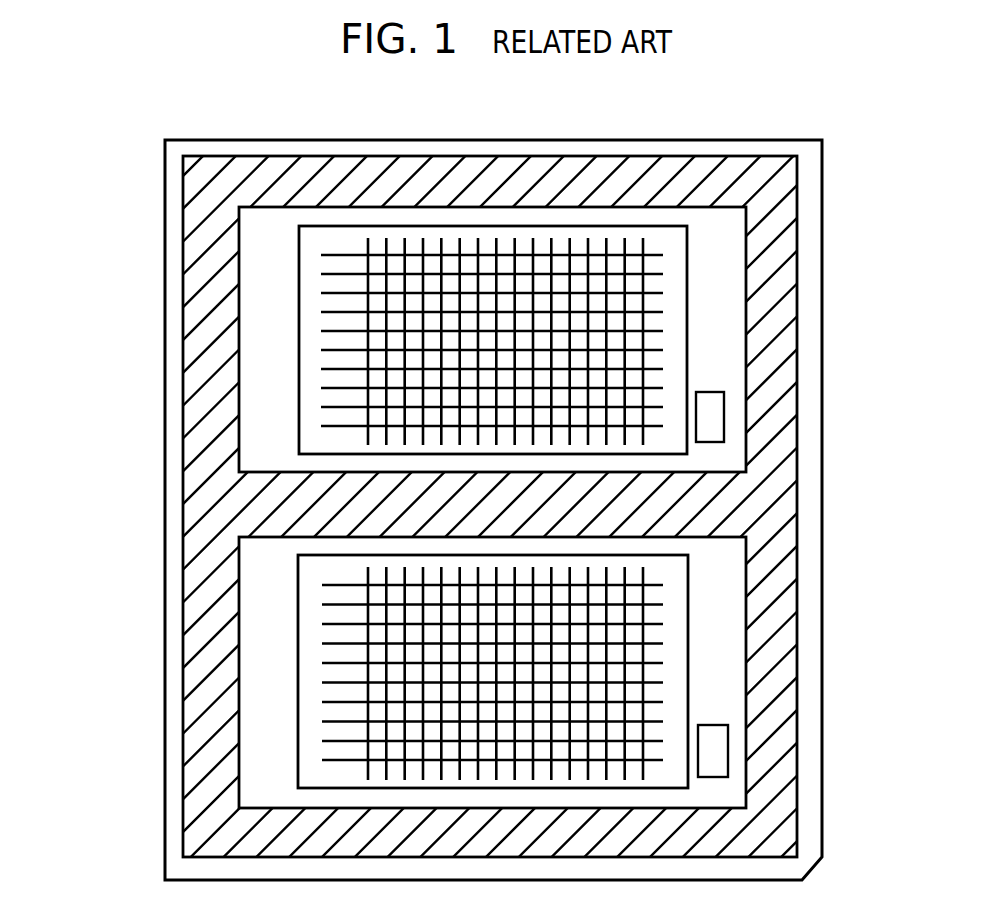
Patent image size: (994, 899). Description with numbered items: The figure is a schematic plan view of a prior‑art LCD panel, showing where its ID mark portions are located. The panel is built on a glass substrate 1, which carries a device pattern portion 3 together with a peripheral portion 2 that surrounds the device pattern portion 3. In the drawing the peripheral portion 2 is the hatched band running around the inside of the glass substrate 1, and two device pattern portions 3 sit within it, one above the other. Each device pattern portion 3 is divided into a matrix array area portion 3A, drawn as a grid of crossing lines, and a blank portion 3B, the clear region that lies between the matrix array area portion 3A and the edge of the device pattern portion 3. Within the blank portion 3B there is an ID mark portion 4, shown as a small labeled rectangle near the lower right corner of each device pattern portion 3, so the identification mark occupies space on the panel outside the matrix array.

The glass substrate 1 is at (162, 646).
The peripheral portion 2 is at (205, 274).
The device pattern portion 3 is at (584, 501).
The matrix array area portion 3A is at (670, 293).
The blank portion 3B is at (718, 348).
The ID mark portion 4 is at (722, 402).